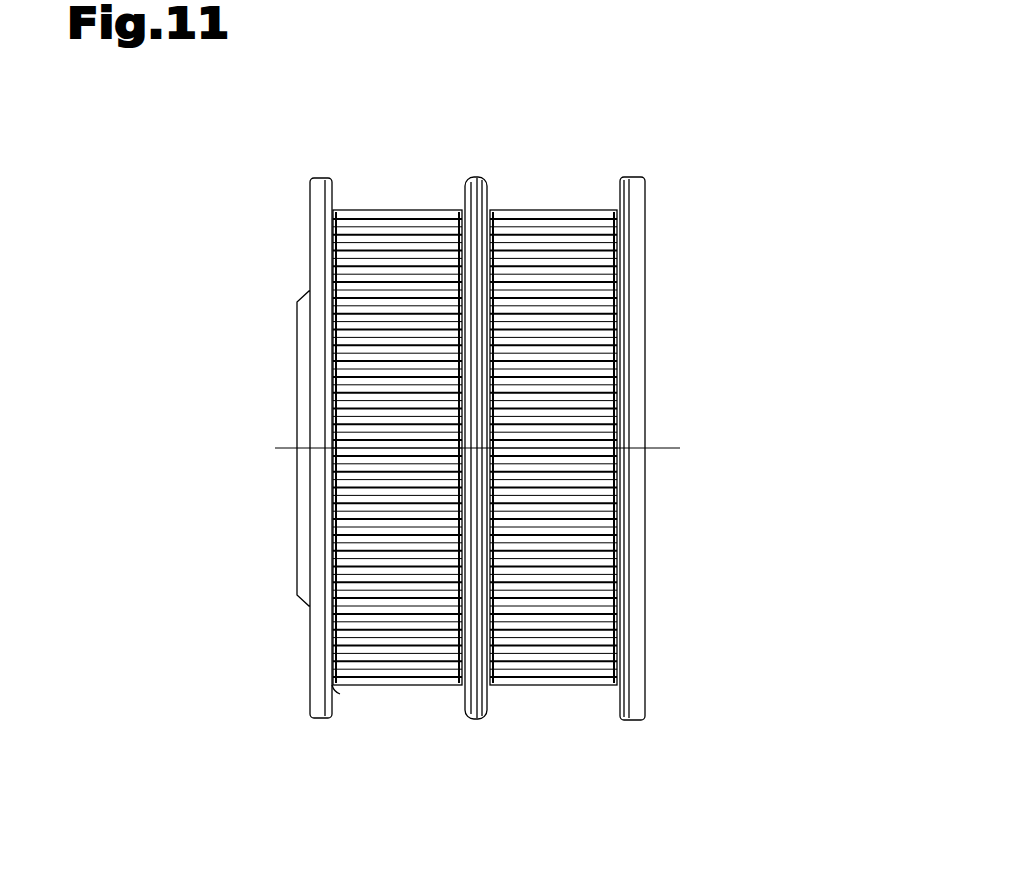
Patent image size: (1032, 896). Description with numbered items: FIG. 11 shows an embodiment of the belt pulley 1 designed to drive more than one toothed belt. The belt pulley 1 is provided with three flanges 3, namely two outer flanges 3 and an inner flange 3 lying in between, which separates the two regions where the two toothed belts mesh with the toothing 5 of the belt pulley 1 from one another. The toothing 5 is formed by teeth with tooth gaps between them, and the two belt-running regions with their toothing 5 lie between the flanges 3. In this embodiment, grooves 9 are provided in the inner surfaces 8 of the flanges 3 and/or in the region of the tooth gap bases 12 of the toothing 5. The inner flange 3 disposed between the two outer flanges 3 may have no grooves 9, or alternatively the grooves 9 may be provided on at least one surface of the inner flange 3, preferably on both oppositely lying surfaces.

The belt pulley 1 is at (695, 128).
The flange 3 is at (303, 722).
The toothing 5 is at (556, 204).
The inner surface 8 is at (339, 696).
The groove 9 is at (336, 201).
The tooth gap base 12 is at (396, 694).